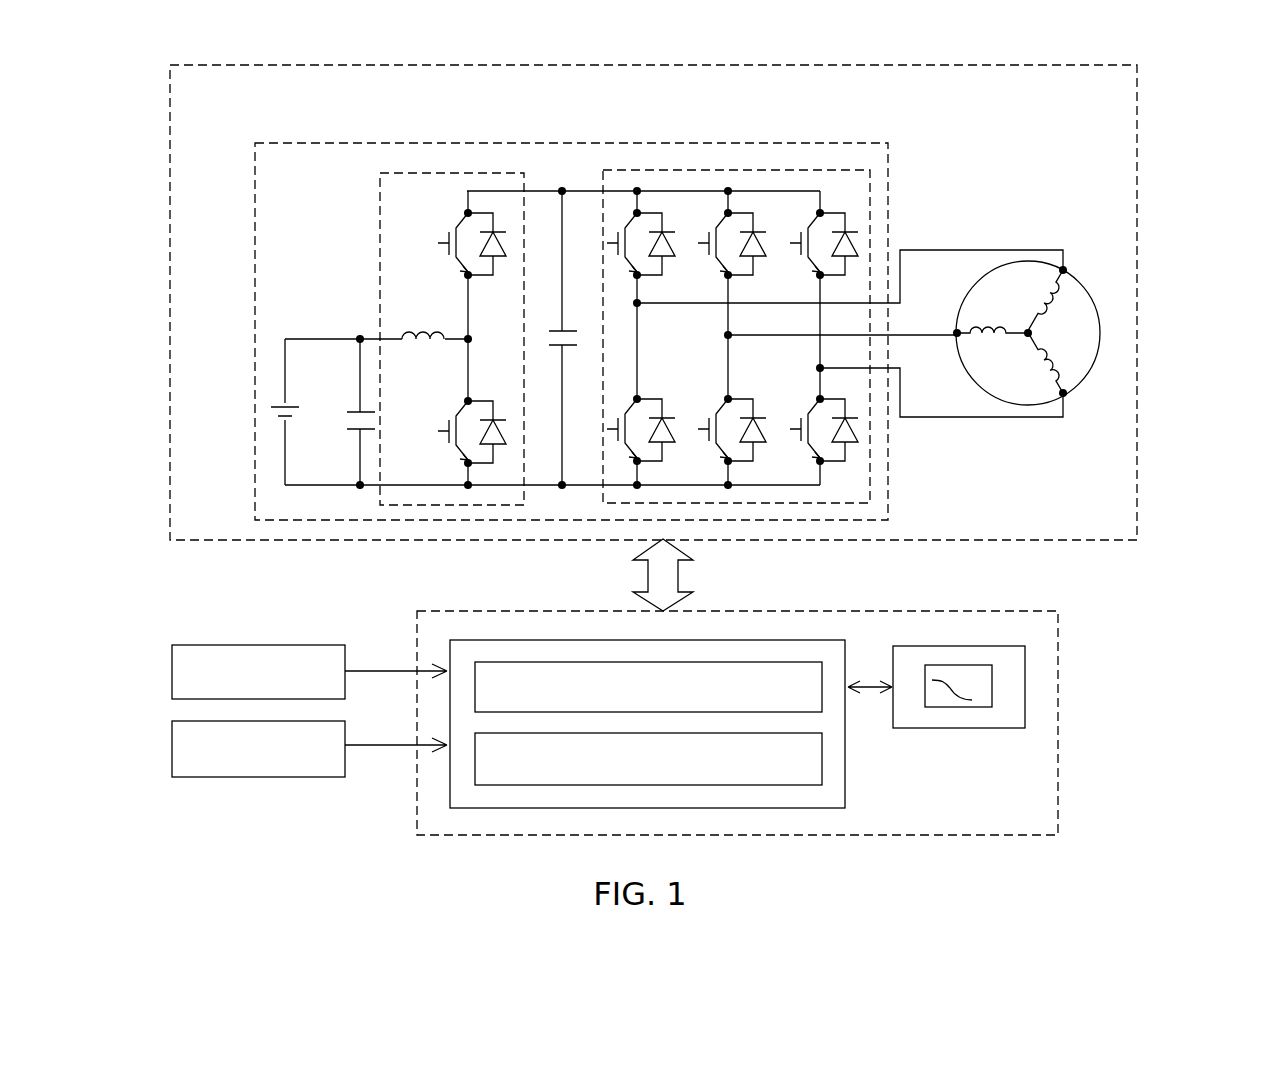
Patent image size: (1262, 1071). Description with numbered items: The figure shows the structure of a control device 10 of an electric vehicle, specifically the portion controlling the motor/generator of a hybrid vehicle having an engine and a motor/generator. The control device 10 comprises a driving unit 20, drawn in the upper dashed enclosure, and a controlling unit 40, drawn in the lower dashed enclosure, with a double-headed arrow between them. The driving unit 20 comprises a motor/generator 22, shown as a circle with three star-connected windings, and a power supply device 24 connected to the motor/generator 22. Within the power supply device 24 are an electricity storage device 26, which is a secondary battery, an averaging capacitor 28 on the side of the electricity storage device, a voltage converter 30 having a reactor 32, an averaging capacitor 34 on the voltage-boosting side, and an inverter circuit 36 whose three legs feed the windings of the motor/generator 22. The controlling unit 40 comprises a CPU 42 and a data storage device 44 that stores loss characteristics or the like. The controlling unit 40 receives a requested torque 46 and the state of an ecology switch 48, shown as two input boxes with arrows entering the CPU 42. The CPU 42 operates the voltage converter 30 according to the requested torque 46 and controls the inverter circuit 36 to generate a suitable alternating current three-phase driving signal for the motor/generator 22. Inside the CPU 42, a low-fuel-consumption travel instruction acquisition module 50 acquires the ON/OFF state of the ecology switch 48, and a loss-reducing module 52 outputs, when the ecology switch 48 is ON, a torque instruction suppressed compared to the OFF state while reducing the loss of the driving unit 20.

The control device of electric vehicle 10 is at (1133, 715).
The driving unit 20 is at (1141, 478).
The motor/generator 22 is at (1092, 300).
The power supply device 24 is at (887, 160).
The electricity storage device 26 is at (275, 422).
The averaging capacitor 28 is at (340, 425).
The voltage converter 30 is at (452, 303).
The reactor 32 is at (420, 350).
The averaging capacitor 34 is at (555, 350).
The inverter circuit 36 is at (718, 170).
The controlling unit 40 is at (1058, 632).
The CPU 42 is at (687, 692).
The data storage device 44 is at (990, 728).
The requested torque 46 is at (172, 676).
The ecology switch 48 is at (172, 750).
The low-fuel-consumption travel instruction acquisition module 50 is at (822, 698).
The loss-reducing module 52 is at (822, 765).